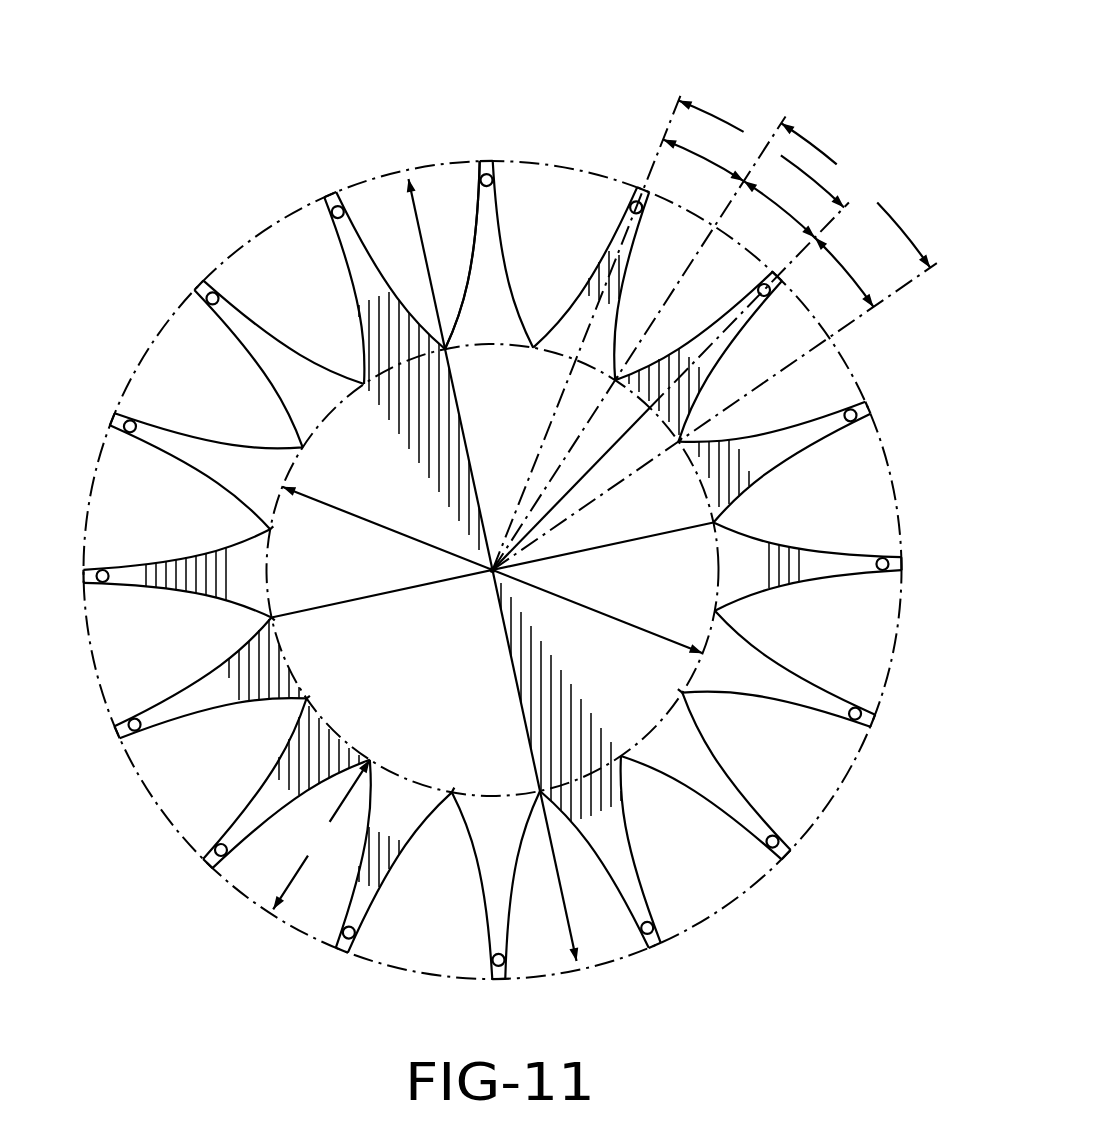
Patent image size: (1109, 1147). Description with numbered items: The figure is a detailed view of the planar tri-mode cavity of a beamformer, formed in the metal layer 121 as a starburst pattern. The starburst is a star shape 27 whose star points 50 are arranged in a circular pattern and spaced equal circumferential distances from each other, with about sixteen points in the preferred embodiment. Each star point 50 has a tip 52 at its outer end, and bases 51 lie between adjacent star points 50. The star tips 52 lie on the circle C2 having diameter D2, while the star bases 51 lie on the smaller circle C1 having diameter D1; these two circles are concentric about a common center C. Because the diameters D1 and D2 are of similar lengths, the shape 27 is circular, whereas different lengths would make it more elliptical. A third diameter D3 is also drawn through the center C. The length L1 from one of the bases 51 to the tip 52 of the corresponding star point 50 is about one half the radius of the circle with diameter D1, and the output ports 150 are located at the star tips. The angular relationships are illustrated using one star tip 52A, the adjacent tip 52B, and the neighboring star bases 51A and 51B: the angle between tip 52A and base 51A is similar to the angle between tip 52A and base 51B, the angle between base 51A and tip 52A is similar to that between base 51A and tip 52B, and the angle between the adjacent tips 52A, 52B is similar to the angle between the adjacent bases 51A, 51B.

The metal layer 121 is at (617, 69).
The star shape 27 is at (477, 210).
The star points 50 is at (377, 258).
The tips 52 is at (336, 196).
The star tip 52A is at (786, 284).
The star tip 52B is at (646, 190).
The output ports 150 is at (636, 210).
The bases 51 is at (272, 527).
The star base 51A is at (617, 380).
The star base 51B is at (680, 442).
The common center C is at (492, 572).
The smaller circle C1 is at (326, 418).
The circle C2 is at (242, 247).
The diameter D1 is at (492, 570).
The diameter D2 is at (493, 570).
The third diameter D3 is at (492, 569).
The length L1 is at (321, 835).